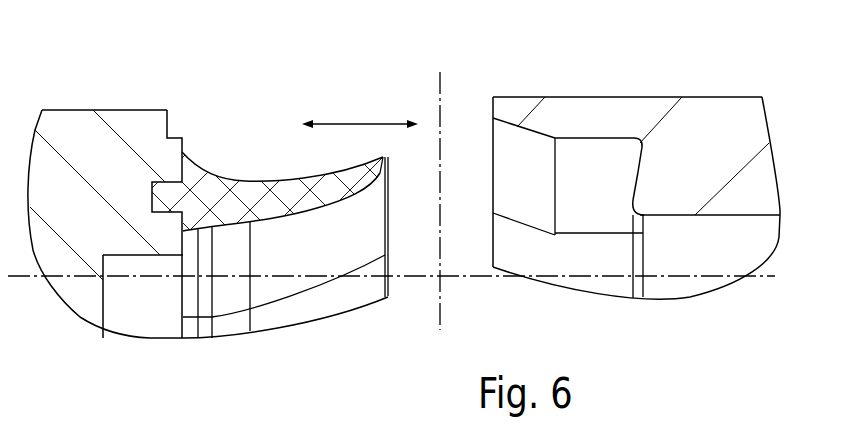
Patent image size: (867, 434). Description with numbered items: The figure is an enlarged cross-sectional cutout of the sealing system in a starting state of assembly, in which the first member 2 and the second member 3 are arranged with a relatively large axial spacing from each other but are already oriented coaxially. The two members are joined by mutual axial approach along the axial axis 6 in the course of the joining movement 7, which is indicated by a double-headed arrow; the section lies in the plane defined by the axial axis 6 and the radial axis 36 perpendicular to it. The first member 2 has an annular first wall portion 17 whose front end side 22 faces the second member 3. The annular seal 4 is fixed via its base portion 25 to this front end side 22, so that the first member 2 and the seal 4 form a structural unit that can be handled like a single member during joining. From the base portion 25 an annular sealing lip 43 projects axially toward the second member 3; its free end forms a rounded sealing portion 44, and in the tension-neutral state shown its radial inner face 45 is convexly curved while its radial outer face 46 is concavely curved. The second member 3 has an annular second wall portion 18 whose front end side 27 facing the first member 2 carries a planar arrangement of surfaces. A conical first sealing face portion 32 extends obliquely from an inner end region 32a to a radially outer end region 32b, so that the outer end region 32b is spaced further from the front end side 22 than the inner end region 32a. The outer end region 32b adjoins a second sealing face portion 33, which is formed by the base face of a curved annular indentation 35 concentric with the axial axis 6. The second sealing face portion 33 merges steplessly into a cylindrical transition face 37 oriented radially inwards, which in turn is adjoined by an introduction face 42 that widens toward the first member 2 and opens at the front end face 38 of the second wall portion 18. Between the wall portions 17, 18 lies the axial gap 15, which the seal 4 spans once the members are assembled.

The first member 2 is at (117, 212).
The first wall portion 17 is at (117, 212).
The front end side 22 is at (190, 128).
The annular seal 4 is at (270, 178).
The radial outer face 46 is at (276, 179).
The sealing lip 43 is at (296, 208).
The radial inner face 45 is at (280, 224).
The base portion 25 is at (193, 205).
The sealing portion 44 is at (384, 162).
The joining movement 7 is at (355, 124).
The radial axis 36 is at (440, 97).
The axial gap 15 is at (470, 252).
The front end side 27 is at (482, 204).
The front end face 38 is at (492, 106).
The introduction face 42 is at (510, 125).
The transition face 37 is at (572, 141).
The second sealing face portion 33 is at (639, 148).
The annular indentation 35 is at (643, 151).
The first sealing face portion 32 is at (636, 195).
The inner end region 32a is at (629, 202).
The outer end region 32b is at (639, 166).
The second member 3 is at (590, 177).
The second wall portion 18 is at (590, 177).
The axial axis 6 is at (775, 277).